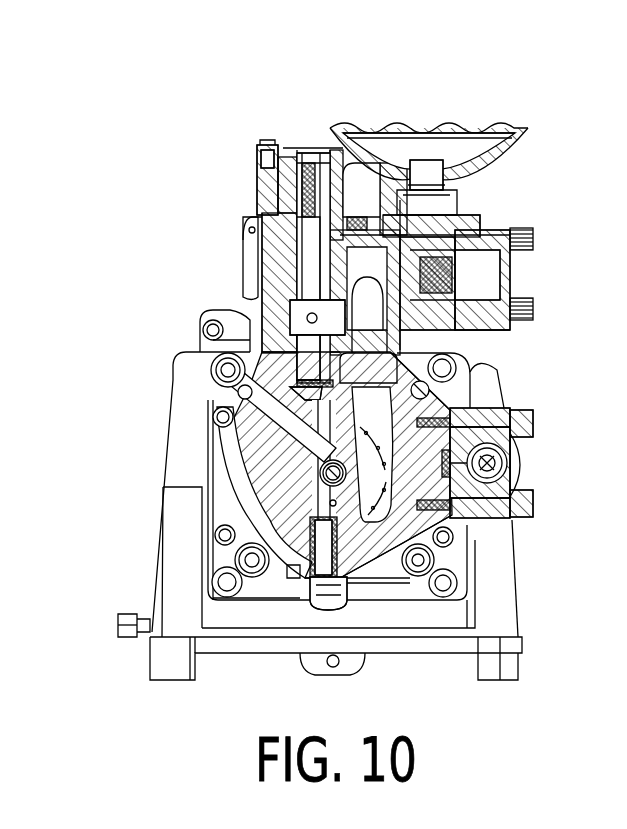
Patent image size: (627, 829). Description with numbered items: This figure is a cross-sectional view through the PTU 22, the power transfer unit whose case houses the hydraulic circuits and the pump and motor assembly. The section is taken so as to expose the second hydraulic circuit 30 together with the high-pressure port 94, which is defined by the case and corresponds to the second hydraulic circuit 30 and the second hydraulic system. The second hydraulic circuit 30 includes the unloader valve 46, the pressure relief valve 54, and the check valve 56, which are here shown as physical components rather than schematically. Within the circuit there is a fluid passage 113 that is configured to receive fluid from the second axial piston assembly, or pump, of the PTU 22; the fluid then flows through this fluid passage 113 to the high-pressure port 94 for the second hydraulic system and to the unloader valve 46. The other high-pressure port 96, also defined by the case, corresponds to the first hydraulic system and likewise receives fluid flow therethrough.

The PTU 22 is at (146, 138).
The second hydraulic circuit 30 is at (358, 296).
The unloader valve 46 is at (292, 190).
The pressure relief valve 54 is at (312, 538).
The check valve 56 is at (453, 270).
The high-pressure port 94 is at (428, 128).
The high-pressure port 96 is at (322, 446).
The fluid passage 113 is at (367, 313).